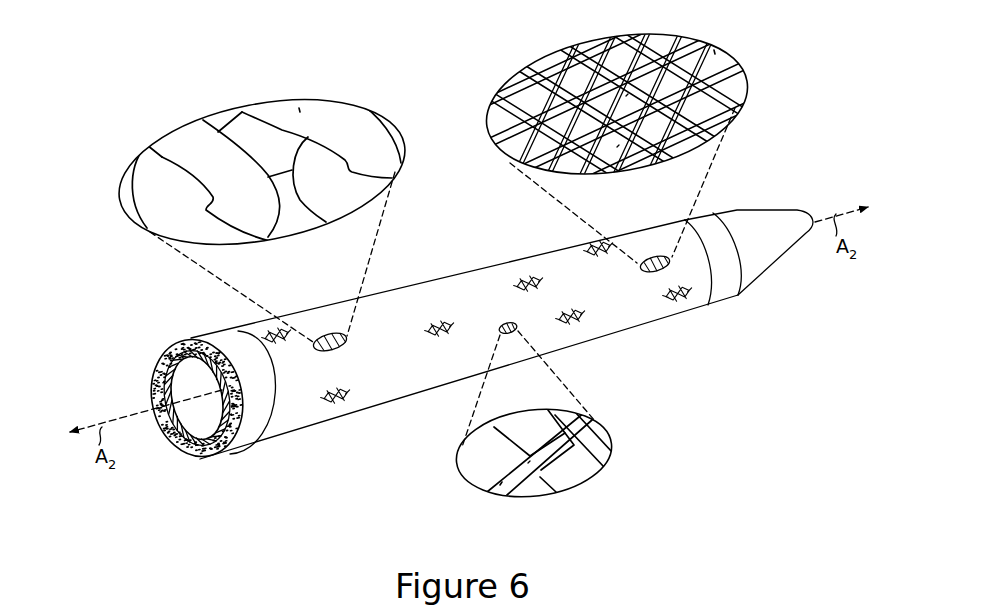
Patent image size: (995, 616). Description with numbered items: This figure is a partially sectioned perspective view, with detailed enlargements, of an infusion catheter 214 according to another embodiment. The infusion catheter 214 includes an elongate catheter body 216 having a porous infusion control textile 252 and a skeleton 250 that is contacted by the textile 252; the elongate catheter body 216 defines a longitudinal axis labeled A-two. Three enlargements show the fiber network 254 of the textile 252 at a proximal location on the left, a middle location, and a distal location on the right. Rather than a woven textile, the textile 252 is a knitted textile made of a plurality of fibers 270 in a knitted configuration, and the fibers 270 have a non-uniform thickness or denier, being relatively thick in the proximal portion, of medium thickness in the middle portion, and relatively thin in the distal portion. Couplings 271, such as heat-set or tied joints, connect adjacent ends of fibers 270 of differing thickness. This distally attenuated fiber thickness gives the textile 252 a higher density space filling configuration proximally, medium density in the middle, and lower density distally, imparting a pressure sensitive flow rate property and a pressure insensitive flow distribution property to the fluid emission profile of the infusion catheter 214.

The infusion catheter 214 is at (116, 340).
The elongate catheter body 216 is at (302, 432).
The skeleton 250 is at (173, 454).
The porous infusion control textile 252 is at (405, 386).
The fiber network 254 is at (137, 171).
The fibers 270 is at (299, 108).
The couplings 271 is at (630, 92).